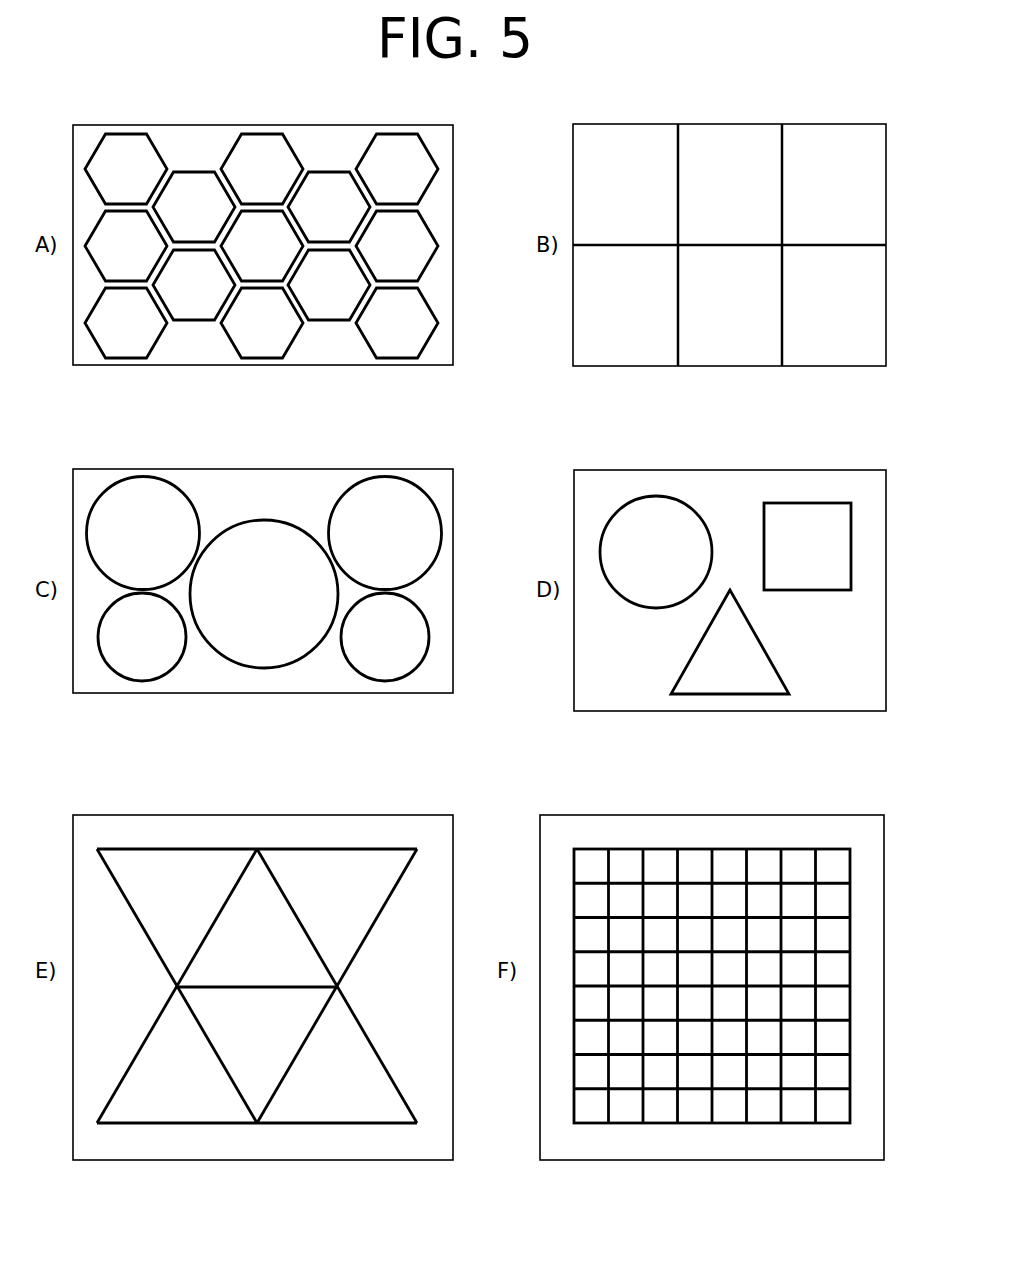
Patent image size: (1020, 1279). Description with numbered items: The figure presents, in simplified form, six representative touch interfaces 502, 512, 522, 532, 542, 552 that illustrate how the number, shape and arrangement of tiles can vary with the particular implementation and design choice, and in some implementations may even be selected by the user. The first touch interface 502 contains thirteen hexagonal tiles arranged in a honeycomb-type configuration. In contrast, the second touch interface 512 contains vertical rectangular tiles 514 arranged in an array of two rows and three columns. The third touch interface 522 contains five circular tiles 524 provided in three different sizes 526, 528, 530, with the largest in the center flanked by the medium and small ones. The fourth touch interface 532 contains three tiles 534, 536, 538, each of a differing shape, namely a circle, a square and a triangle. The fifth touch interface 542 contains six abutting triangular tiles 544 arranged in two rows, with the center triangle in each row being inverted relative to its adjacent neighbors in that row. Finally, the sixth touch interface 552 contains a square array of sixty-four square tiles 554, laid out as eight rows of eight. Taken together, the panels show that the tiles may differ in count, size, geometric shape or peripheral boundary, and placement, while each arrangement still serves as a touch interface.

In FIG. 5A, the touch interface 502 is at (453, 158).
In FIG. 5B, the touch interface 512 is at (573, 332).
In FIG. 5A, the vertical rectangular tile 514 is at (261, 246).
In FIG. 5B, the vertical rectangular tile 514 is at (729, 245).
In FIG. 5C, the touch interface 522 is at (453, 503).
In FIG. 5C, the circular tile 524 is at (190, 493).
In FIG. 5C, the circular tile size 526 is at (264, 594).
In FIG. 5C, the circular tile size 528 is at (264, 533).
In FIG. 5C, the circular tile size 530 is at (263, 637).
In FIG. 5D, the touch interface 532 is at (573, 677).
In FIG. 5D, the tile 534 is at (656, 552).
In FIG. 5D, the tile 536 is at (807, 546).
In FIG. 5D, the tile 538 is at (730, 642).
In FIG. 5E, the touch interface 542 is at (455, 848).
In FIG. 5E, the triangular tile 544 is at (257, 986).
In FIG. 5F, the touch interface 552 is at (538, 1123).
In FIG. 5F, the square tile 554 is at (694, 848).